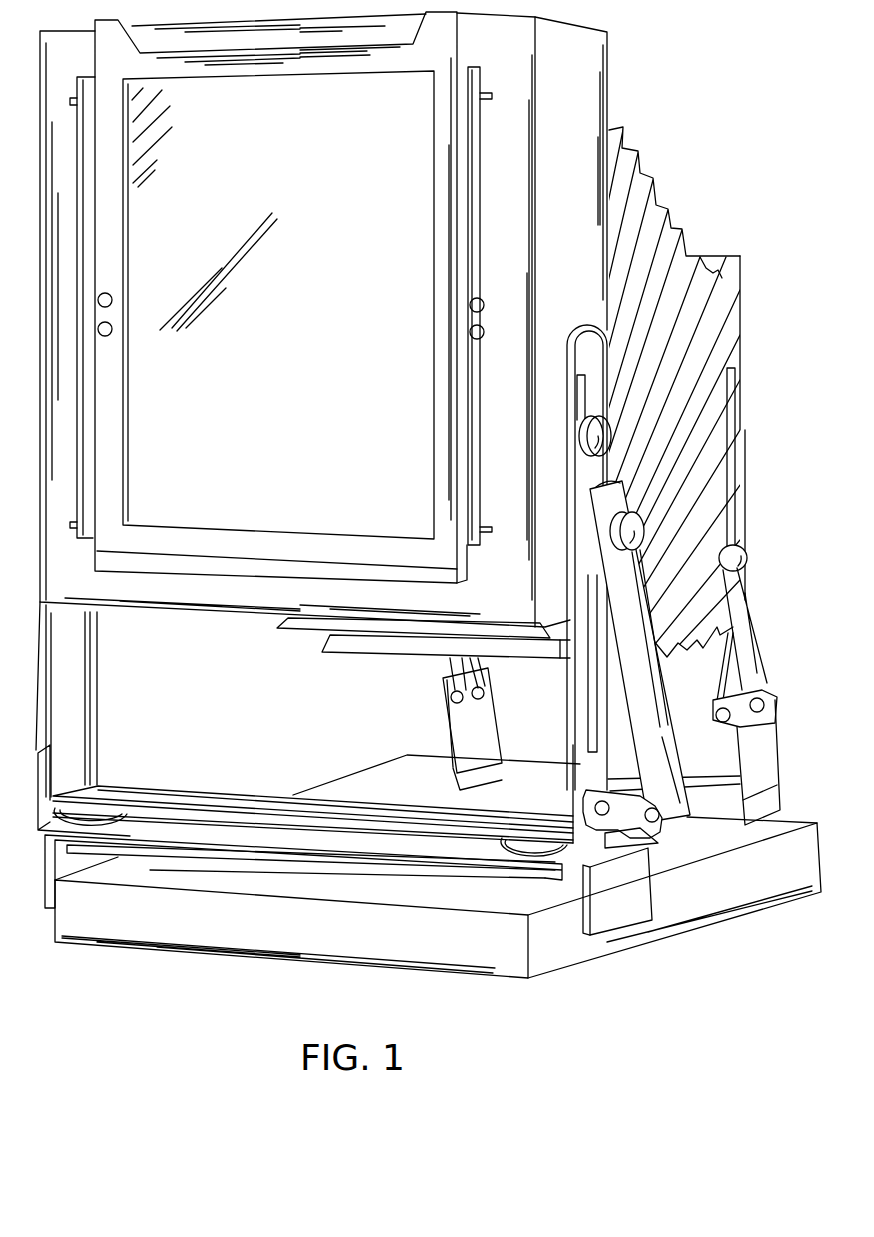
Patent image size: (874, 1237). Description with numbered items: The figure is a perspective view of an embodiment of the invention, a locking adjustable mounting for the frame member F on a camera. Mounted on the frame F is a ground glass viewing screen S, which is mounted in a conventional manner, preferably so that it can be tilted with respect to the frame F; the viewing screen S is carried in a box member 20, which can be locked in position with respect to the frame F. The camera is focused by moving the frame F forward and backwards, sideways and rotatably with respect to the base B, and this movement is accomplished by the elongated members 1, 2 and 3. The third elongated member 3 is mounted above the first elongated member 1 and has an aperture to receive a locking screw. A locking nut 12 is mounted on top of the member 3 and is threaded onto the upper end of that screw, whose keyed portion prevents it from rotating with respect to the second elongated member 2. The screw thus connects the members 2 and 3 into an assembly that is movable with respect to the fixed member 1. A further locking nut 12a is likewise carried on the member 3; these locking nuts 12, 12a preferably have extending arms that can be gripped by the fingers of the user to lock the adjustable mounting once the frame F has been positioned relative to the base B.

The box member 20 is at (39, 432).
The ground glass viewing screen S is at (135, 403).
The frame member F is at (40, 690).
The third elongated member 3 is at (38, 800).
The locking nut 12a is at (123, 814).
The first elongated member 1 is at (45, 883).
The second elongated member 2 is at (165, 858).
The locking nut 12 is at (507, 840).
The base B is at (692, 932).